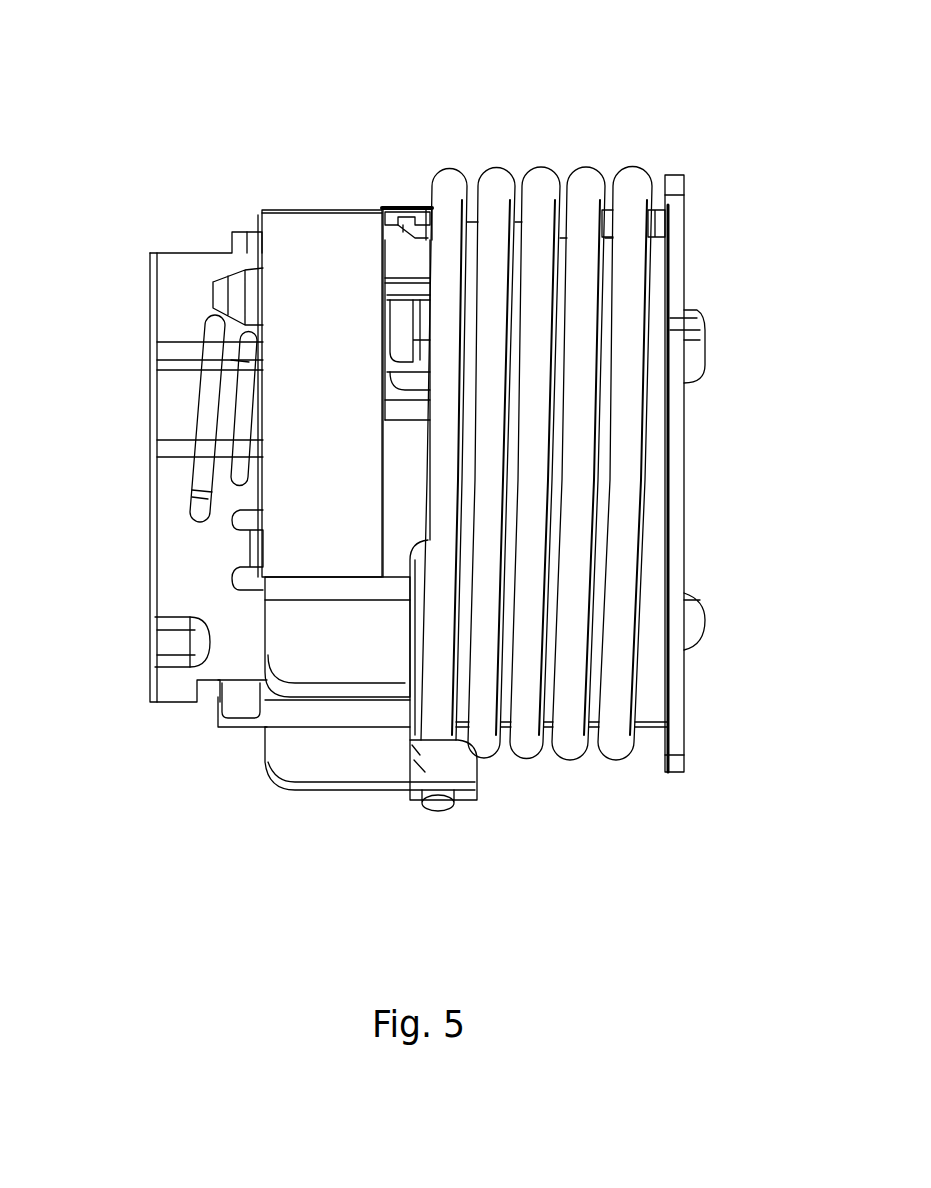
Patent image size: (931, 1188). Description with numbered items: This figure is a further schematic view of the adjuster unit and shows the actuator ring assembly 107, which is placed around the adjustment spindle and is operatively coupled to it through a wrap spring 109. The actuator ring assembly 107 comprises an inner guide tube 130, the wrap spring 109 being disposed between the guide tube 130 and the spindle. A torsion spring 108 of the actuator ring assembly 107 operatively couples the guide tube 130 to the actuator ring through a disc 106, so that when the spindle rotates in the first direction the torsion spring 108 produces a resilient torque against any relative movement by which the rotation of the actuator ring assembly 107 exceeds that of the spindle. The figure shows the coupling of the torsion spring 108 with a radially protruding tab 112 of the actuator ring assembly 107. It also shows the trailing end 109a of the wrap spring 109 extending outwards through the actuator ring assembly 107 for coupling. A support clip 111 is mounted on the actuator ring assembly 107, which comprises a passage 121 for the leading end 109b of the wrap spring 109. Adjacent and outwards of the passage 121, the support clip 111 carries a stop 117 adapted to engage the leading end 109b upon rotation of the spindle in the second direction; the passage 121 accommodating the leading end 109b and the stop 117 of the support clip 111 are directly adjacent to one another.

The actuator ring assembly 107 is at (186, 110).
The inner guide tube 130 is at (175, 275).
The wrap spring 109 is at (207, 397).
The trailing end 109a is at (198, 470).
The leading end 109b is at (426, 205).
The support clip 111 is at (305, 533).
The stop 117 is at (400, 207).
The passage 121 is at (410, 246).
The torsion spring 108 is at (584, 187).
The disc 106 is at (681, 517).
The radially protruding tab 112 is at (357, 765).